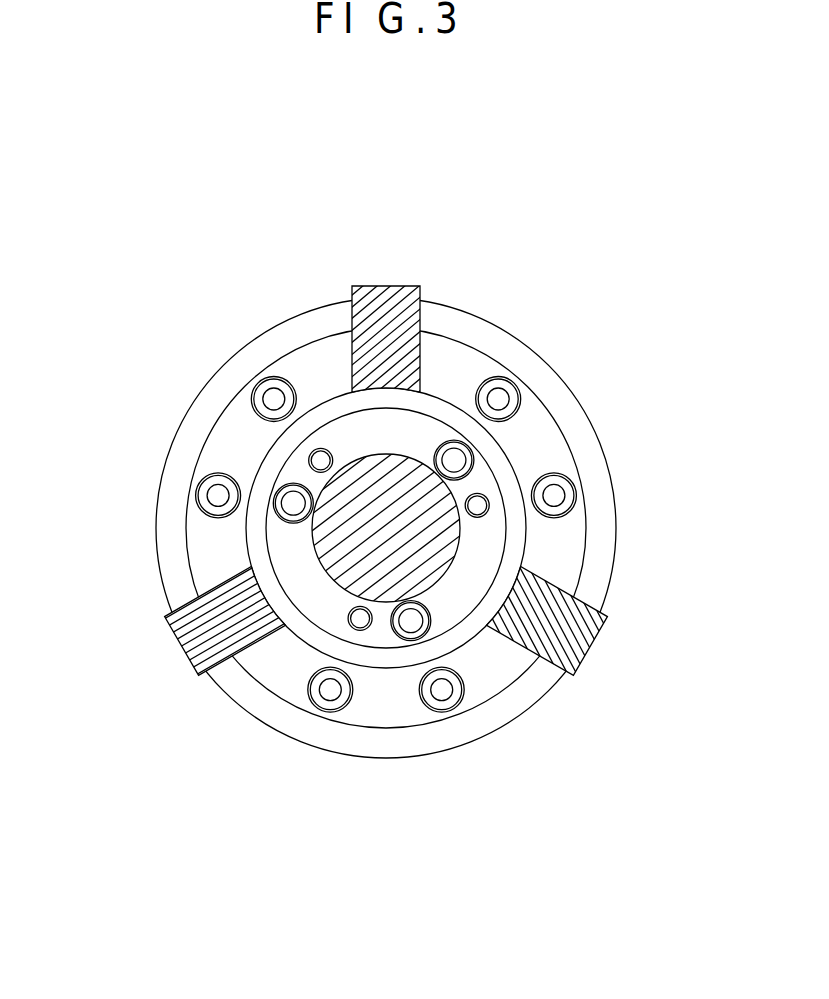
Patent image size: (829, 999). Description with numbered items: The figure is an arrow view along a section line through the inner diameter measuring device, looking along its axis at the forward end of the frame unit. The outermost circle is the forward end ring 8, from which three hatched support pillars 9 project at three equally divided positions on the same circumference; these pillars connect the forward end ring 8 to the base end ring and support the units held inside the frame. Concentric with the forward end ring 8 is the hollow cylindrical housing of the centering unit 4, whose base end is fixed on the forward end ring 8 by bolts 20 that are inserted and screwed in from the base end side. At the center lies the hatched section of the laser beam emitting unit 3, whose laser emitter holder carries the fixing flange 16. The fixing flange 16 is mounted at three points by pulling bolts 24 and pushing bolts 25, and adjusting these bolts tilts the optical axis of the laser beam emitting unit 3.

The laser beam emitting unit 3 is at (331, 582).
The centering unit 4 is at (182, 416).
The forward end ring 8 is at (233, 395).
The support pillar 9 is at (402, 285).
The fixing flange 16 is at (506, 530).
The bolt 20 is at (285, 380).
The pulling bolt 24 is at (433, 622).
The pushing bolt 25 is at (373, 628).